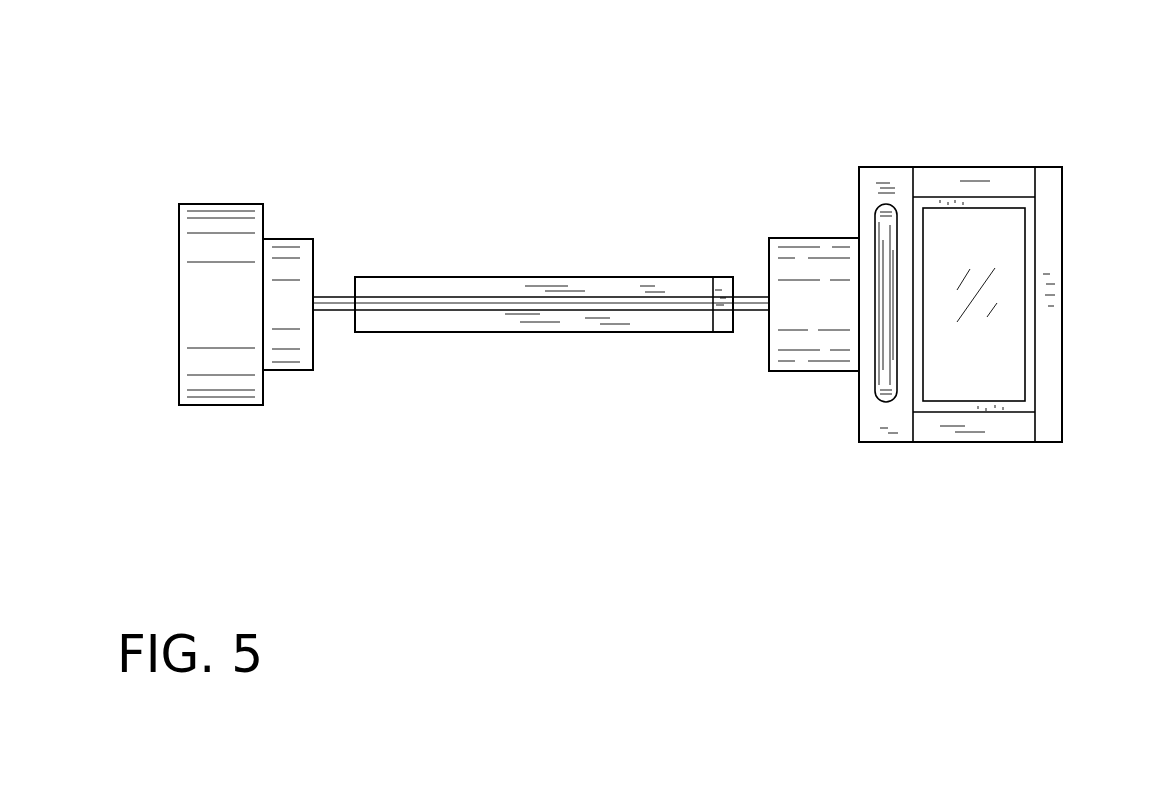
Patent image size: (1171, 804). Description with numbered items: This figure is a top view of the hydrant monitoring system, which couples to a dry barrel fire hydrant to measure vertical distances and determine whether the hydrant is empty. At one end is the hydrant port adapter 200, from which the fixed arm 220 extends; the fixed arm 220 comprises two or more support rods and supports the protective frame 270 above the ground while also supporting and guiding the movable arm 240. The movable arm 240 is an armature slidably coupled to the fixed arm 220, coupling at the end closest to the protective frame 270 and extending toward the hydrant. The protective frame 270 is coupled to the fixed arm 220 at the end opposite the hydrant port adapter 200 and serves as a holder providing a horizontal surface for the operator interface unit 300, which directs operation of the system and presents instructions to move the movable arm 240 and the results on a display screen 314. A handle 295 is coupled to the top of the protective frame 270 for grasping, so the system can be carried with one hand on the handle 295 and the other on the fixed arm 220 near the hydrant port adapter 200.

The hydrant port adapter 200 is at (222, 213).
The fixed arm 220 is at (530, 306).
The movable arm 240 is at (638, 290).
The protective frame 270 is at (899, 175).
The handle 295 is at (885, 398).
The operator interface unit 300 is at (1011, 205).
The display screen 314 is at (1003, 330).